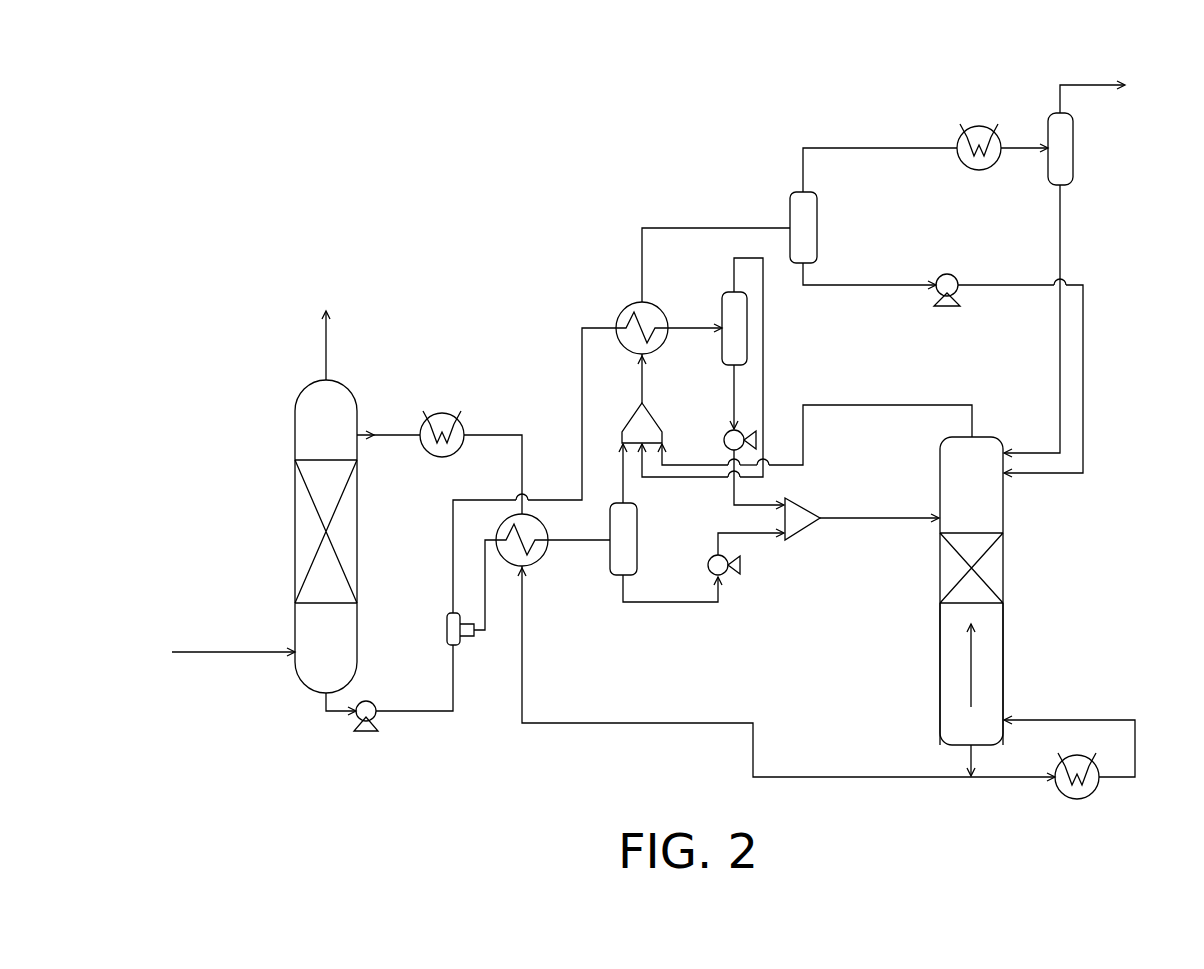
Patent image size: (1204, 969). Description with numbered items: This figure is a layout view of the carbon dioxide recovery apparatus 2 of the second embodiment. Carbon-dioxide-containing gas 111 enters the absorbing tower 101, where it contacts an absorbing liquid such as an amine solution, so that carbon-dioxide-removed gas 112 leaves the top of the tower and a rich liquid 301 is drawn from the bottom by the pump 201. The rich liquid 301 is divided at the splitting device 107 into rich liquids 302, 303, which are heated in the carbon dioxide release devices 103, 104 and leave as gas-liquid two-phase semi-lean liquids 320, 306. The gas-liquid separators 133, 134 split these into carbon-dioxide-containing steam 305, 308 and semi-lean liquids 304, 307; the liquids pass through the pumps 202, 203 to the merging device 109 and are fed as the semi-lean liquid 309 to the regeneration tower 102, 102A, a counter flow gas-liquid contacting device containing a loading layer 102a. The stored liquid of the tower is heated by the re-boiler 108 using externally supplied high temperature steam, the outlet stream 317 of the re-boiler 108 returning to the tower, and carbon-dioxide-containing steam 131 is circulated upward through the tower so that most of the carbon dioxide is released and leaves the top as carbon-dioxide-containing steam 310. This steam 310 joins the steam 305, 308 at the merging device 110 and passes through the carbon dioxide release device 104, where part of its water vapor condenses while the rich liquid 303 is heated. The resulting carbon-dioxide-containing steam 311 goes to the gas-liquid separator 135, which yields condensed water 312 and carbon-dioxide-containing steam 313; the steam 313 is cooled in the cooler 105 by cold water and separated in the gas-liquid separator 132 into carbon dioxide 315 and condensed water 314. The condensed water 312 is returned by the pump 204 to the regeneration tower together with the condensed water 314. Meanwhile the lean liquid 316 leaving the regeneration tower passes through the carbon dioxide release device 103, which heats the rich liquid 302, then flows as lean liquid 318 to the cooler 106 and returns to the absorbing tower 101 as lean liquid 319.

The carbon dioxide recovery apparatus 2 is at (360, 230).
The absorbing tower 101 is at (295, 450).
The regenerator 102 is at (1026, 591).
The loading layer 102a is at (990, 568).
The regeneration tower 102A is at (1003, 616).
The carbon dioxide release device 103 is at (537, 563).
The carbon dioxide release device 104 is at (625, 310).
The cooler 105 is at (969, 127).
The cooler 106 is at (458, 412).
The splitting device 107 is at (447, 630).
The re-boiler 108 is at (1056, 786).
The merging device 109 is at (796, 537).
The merging device 110 is at (660, 422).
The carbon-dioxide-containing gas 111 is at (211, 649).
The carbon-dioxide-removed gas 112 is at (325, 338).
The carbon-dioxide-containing steam 131 is at (975, 666).
The gas-liquid separator 132 is at (1075, 135).
The gas-liquid separator 133 is at (638, 530).
The gas-liquid separator 134 is at (748, 330).
The gas-liquid separator 135 is at (792, 194).
The pump 201 is at (369, 733).
The pump 202 is at (724, 578).
The pump 203 is at (742, 430).
The pump 204 is at (955, 308).
The rich liquid 301 is at (348, 713).
The rich liquid 302 is at (475, 638).
The rich liquid 303 is at (452, 522).
The semi-lean liquid 304 is at (680, 604).
The carbon-dioxide-containing steam 305 is at (625, 482).
The semi-lean liquid 306 is at (688, 324).
The semi-lean liquid 307 is at (735, 392).
The carbon-dioxide-containing steam 308 is at (748, 257).
The semi-lean liquid 309 is at (871, 521).
The carbon-dioxide-containing steam 310 is at (805, 430).
The carbon-dioxide-containing steam 311 is at (662, 227).
The condensed water 312 is at (888, 284).
The carbon-dioxide-containing steam 313 is at (855, 147).
The condensed water 314 is at (1062, 228).
The carbon dioxide 315 is at (1070, 84).
The lean liquid 316 is at (878, 776).
The reboiler return line 317 is at (1118, 718).
The lean liquid 318 is at (482, 437).
The lean liquid 319 is at (395, 433).
The semi-lean liquid 320 is at (581, 543).